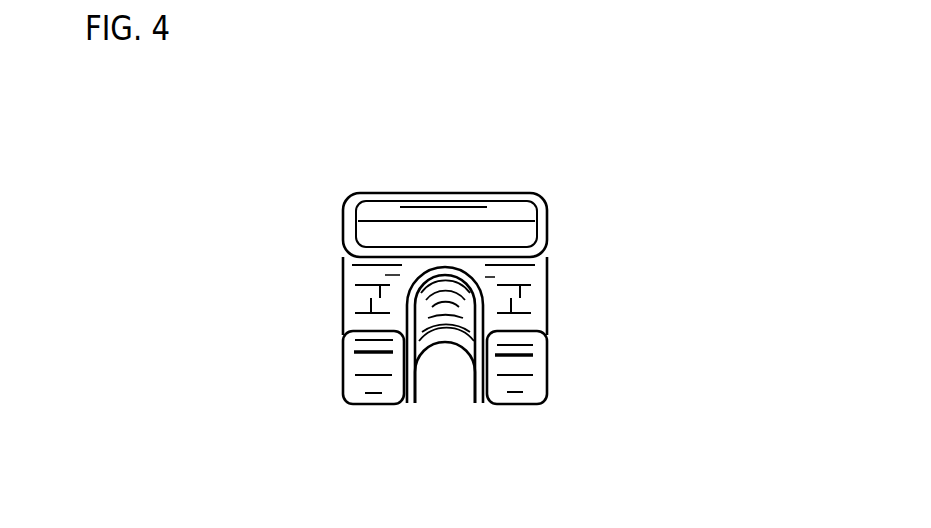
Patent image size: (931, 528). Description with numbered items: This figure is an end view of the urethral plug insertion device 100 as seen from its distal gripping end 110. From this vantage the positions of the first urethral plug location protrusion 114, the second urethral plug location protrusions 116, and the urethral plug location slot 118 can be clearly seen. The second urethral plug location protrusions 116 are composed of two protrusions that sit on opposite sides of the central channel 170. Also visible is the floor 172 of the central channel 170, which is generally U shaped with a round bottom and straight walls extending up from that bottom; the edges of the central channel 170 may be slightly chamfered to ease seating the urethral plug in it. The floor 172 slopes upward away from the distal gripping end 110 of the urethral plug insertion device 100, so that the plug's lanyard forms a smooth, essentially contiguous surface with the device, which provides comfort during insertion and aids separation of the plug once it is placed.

The urethral plug insertion device 100 is at (572, 151).
The distal gripping end 110 is at (538, 275).
The first urethral plug location protrusion 114 is at (438, 233).
The second urethral plug location protrusions 116 is at (370, 370).
The urethral plug location slot 118 is at (522, 307).
The central channel 170 is at (440, 383).
The floor 172 is at (438, 313).